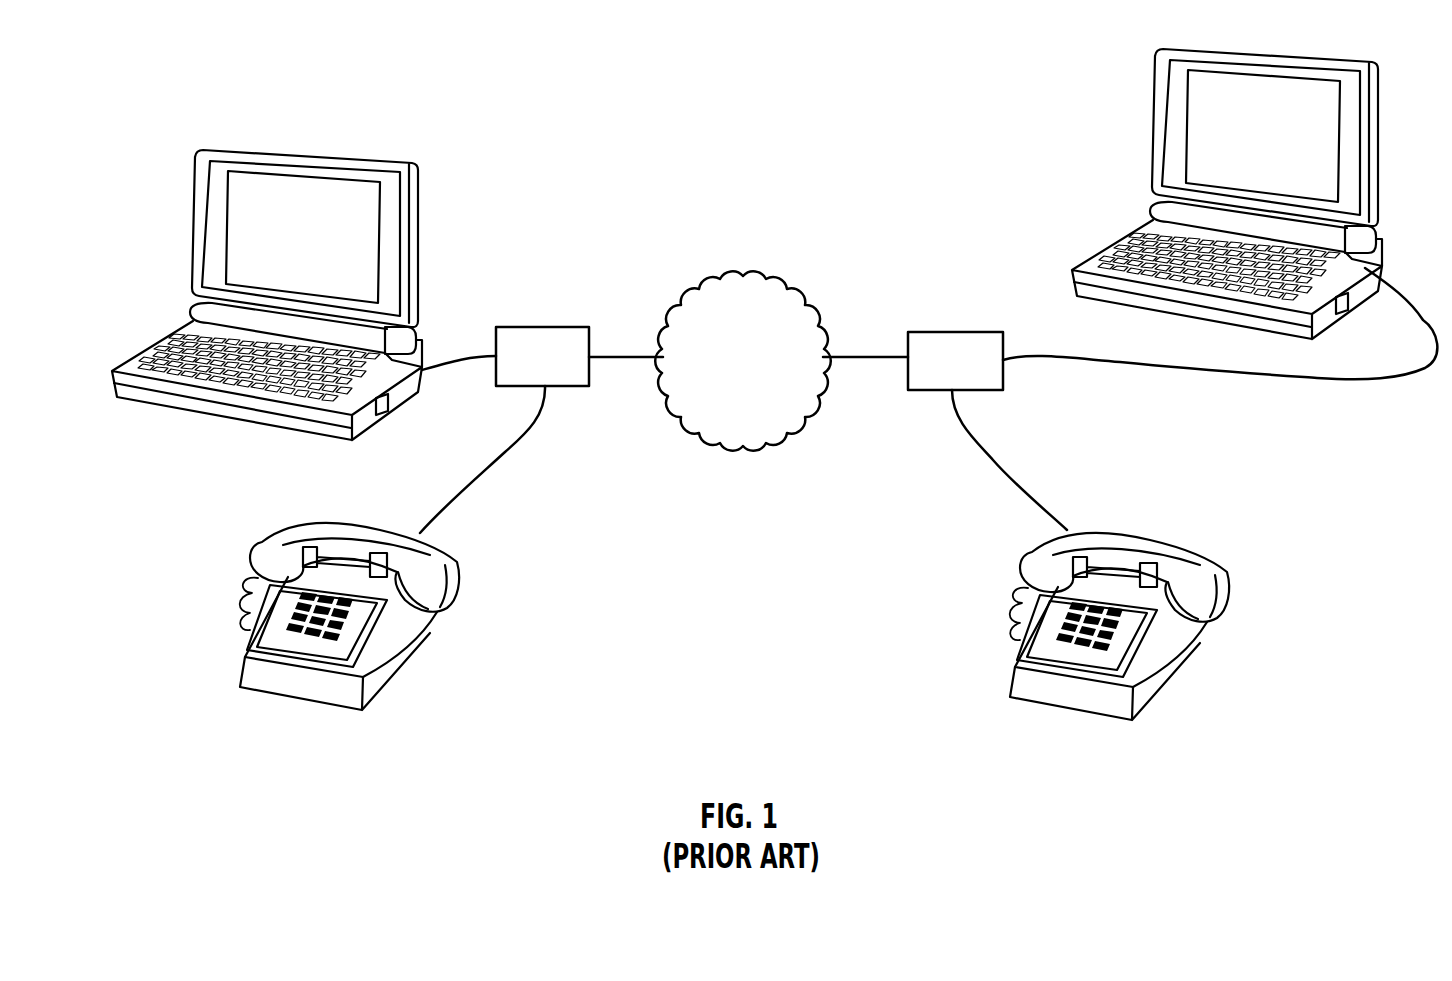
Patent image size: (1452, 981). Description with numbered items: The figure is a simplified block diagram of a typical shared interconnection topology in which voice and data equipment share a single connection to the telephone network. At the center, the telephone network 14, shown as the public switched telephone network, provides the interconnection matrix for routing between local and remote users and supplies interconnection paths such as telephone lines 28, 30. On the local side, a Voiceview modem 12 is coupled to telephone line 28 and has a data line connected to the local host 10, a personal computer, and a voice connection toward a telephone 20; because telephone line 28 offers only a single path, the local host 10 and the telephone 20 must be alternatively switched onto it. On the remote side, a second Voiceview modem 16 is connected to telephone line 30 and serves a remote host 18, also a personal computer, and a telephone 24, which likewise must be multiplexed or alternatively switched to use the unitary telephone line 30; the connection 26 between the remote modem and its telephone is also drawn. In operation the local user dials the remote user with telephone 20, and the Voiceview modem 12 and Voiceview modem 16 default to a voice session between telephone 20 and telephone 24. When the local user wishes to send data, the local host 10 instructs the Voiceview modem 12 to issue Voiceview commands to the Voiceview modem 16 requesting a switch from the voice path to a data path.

The local host 10 is at (420, 242).
The Voiceview modem 12 is at (532, 327).
The telephone network 14 is at (748, 278).
The Voiceview modem 16 is at (937, 332).
The remote host 18 is at (1152, 127).
The telephone 20 is at (368, 522).
The telephone 24 is at (1183, 540).
The telephone line 26 is at (1030, 460).
The telephone line 28 is at (605, 357).
The telephone line 30 is at (1305, 378).